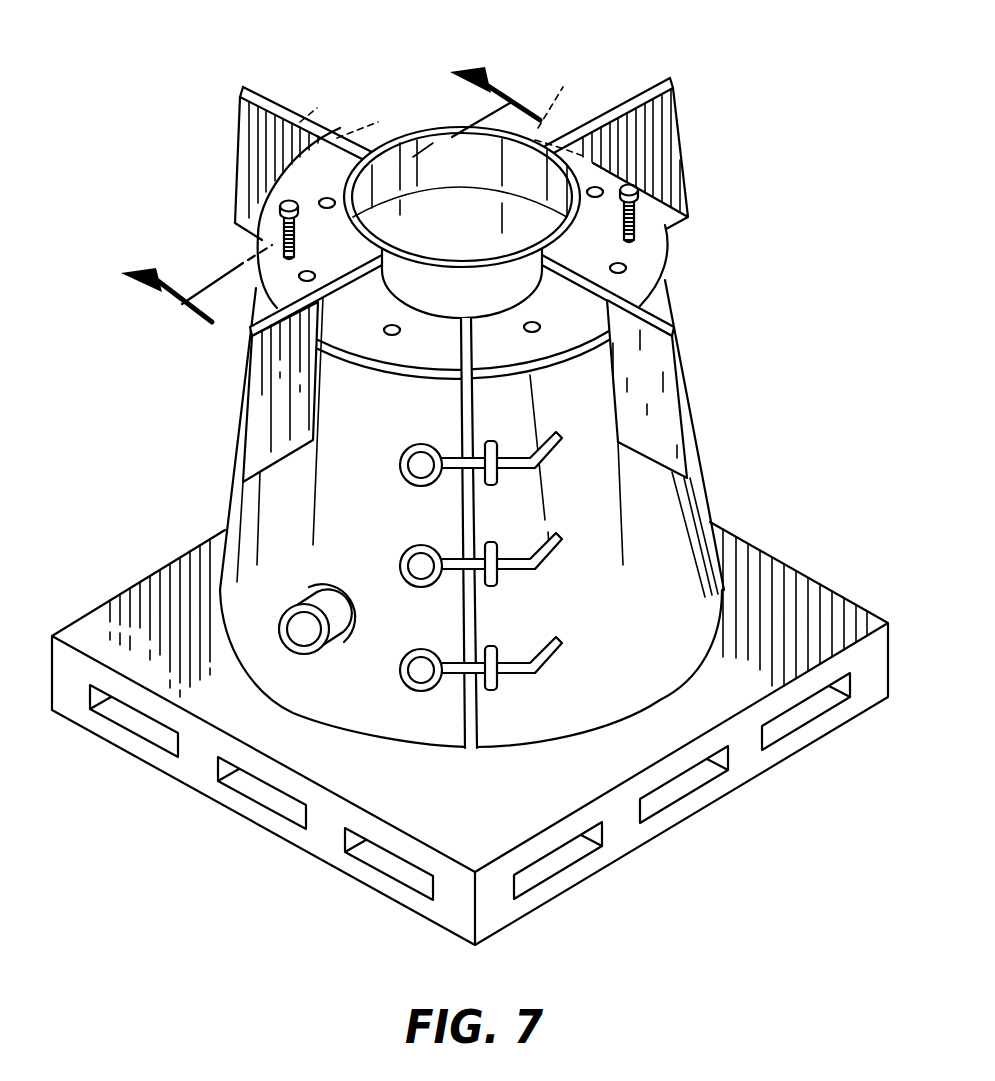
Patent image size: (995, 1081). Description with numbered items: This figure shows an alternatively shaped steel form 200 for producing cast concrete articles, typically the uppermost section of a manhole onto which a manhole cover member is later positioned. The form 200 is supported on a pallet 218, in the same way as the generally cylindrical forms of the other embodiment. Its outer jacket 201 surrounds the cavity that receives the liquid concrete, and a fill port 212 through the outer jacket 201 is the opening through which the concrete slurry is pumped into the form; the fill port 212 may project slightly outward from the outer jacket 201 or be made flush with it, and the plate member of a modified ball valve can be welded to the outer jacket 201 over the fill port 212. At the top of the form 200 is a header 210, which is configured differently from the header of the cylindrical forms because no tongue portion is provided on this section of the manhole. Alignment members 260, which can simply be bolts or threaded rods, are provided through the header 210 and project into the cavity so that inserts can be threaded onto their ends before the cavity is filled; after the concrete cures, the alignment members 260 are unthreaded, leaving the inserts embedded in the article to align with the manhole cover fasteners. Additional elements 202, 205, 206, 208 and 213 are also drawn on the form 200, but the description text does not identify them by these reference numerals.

The form 200 is at (470, 474).
The outer jacket 201 is at (683, 495).
The tube 202 is at (416, 143).
The clamp bracket 205 is at (550, 448).
The conduit rod 206 is at (468, 634).
The hole 208 is at (327, 198).
The header 210 is at (664, 256).
The fill port 212 is at (284, 645).
The gusset fin 213 is at (267, 90).
The pallet 218 is at (94, 608).
The alignment members 260 is at (280, 207).